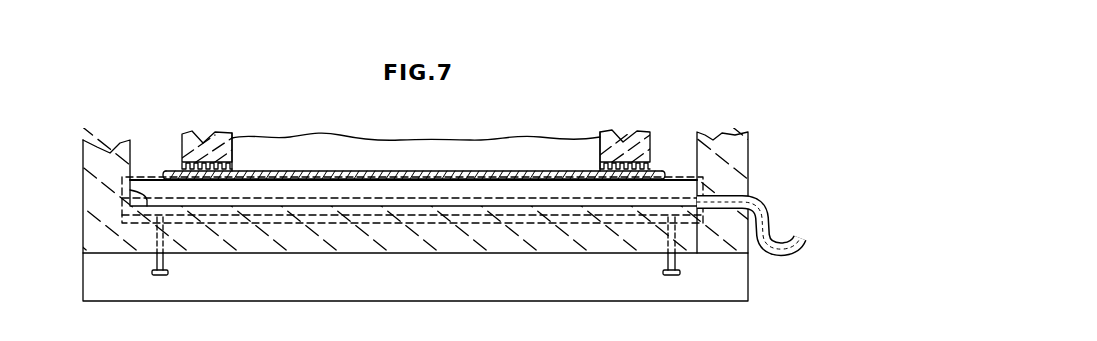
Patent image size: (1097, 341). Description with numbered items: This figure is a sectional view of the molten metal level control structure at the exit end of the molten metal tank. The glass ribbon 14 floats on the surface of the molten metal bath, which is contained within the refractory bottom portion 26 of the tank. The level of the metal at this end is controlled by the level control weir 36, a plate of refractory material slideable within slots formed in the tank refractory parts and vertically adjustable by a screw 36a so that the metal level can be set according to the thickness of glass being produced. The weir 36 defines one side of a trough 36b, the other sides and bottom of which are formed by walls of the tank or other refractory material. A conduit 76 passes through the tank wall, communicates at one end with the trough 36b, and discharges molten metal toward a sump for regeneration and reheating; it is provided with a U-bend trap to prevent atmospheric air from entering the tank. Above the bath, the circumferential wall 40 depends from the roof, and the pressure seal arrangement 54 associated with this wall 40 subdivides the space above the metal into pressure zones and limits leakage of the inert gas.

The ribbon of glass 14 is at (440, 171).
The refractory bottom portion 26 is at (83, 283).
The level control weir 36 is at (688, 178).
The screw 36a is at (163, 275).
The trough 36b is at (130, 190).
The circumferential wall 40 is at (204, 146).
The pressure seal arrangement 54 is at (176, 168).
The conduit 76 is at (770, 218).